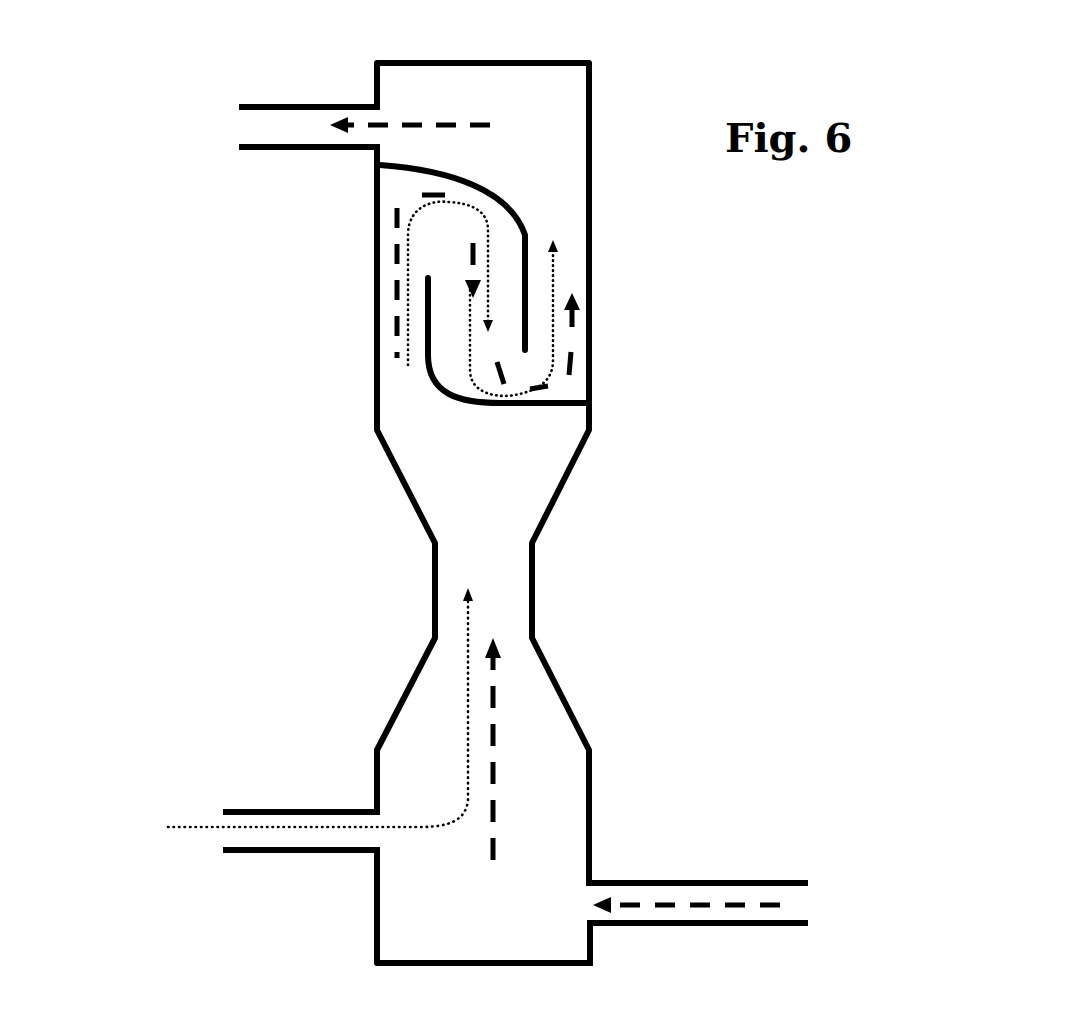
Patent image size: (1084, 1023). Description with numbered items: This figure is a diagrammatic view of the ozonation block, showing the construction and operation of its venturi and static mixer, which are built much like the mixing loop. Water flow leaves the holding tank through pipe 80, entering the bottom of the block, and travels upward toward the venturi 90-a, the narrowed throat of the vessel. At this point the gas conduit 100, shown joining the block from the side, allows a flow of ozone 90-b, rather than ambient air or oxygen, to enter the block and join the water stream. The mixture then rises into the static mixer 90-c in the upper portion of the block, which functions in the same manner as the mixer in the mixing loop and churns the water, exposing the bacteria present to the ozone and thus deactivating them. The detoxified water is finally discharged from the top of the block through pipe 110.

The discharge pipe 110 is at (280, 150).
The static mixer 90-c is at (610, 102).
The venturi 90-a is at (425, 602).
The gas conduit 100 is at (310, 805).
The flow of ozone 90-b is at (168, 828).
The pipe 80 is at (805, 875).